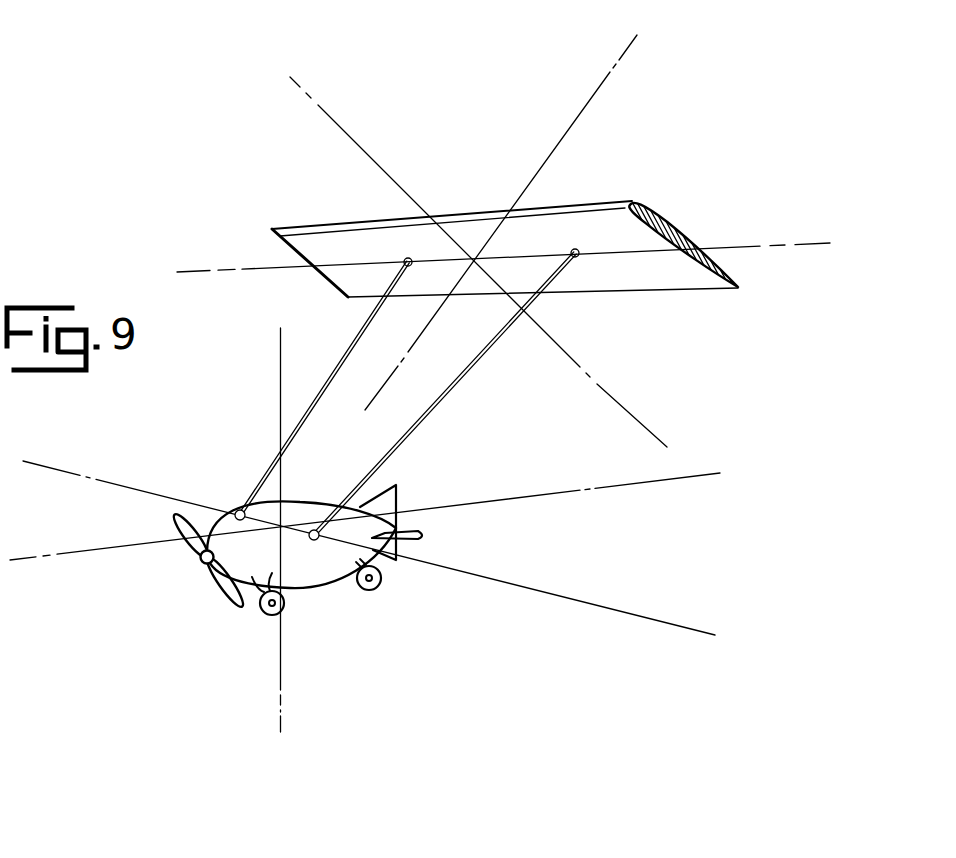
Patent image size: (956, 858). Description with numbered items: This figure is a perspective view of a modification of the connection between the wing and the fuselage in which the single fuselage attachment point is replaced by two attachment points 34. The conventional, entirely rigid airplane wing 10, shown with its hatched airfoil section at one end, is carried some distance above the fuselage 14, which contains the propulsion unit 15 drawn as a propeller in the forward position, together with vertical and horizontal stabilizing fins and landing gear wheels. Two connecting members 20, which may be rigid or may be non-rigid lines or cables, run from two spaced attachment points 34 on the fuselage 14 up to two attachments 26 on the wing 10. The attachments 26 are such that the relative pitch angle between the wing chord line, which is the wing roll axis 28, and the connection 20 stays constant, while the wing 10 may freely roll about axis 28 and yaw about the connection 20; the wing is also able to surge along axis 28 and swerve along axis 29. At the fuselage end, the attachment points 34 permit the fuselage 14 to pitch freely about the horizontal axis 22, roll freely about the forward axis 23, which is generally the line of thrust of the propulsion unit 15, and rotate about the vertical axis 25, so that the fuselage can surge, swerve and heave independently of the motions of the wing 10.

The airplane wing 10 is at (530, 214).
The fuselage 14 is at (312, 574).
The propulsion unit 15 is at (203, 570).
The mechanical connection 20 is at (333, 375).
The horizontal axis 22 is at (125, 488).
The forward axis 23 is at (655, 484).
The vertical axis 25 is at (282, 368).
The wing attachment 26 is at (406, 258).
The wing roll axis 28 is at (333, 121).
The wing swerve axis 29 is at (197, 270).
The attachment points 34 is at (240, 512).